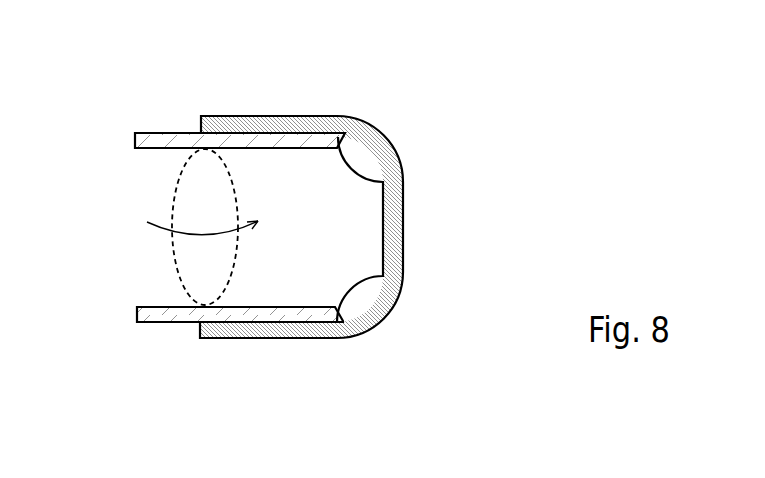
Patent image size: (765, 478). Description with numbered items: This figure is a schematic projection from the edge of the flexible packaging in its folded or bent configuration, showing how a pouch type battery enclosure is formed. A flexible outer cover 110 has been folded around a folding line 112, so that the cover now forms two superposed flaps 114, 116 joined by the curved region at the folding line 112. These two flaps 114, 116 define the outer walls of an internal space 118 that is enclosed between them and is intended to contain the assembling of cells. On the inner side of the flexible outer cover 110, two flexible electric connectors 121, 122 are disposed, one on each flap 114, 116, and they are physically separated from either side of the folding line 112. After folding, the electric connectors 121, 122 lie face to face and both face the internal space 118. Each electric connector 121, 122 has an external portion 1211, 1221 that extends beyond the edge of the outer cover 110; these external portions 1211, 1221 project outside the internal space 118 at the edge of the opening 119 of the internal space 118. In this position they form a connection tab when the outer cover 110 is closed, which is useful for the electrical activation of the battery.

The flexible outer cover 110 is at (283, 225).
The folding line 112 is at (388, 232).
The flap 114 is at (283, 126).
The flap 116 is at (285, 332).
The internal space 118 is at (175, 221).
The opening 119 is at (175, 265).
The flexible electric connector 121 is at (221, 102).
The external portion 1211 is at (166, 132).
The flexible electric connector 122 is at (218, 355).
The external portion 1221 is at (167, 323).